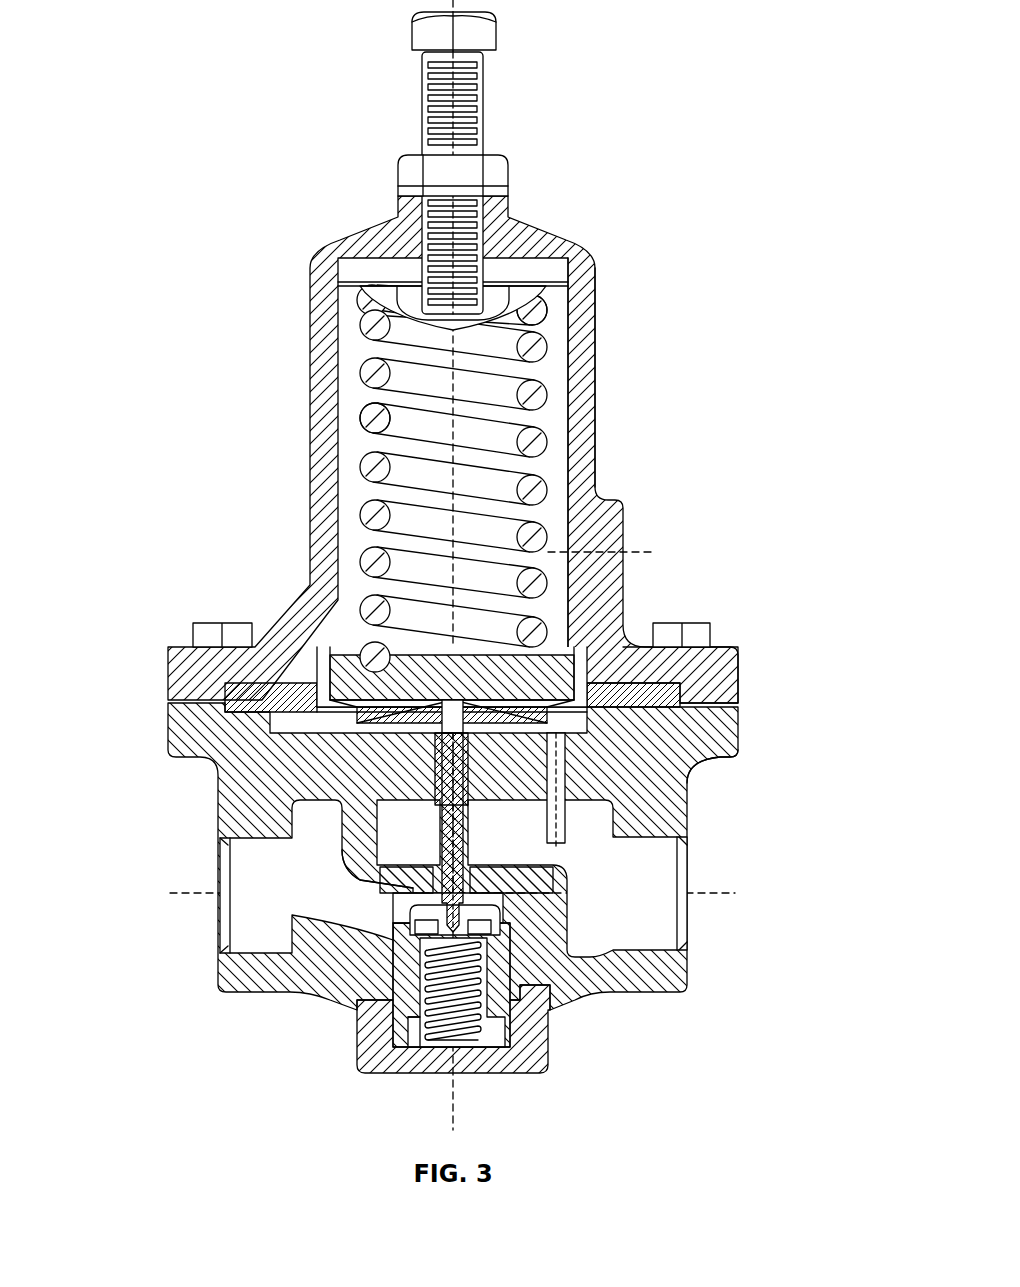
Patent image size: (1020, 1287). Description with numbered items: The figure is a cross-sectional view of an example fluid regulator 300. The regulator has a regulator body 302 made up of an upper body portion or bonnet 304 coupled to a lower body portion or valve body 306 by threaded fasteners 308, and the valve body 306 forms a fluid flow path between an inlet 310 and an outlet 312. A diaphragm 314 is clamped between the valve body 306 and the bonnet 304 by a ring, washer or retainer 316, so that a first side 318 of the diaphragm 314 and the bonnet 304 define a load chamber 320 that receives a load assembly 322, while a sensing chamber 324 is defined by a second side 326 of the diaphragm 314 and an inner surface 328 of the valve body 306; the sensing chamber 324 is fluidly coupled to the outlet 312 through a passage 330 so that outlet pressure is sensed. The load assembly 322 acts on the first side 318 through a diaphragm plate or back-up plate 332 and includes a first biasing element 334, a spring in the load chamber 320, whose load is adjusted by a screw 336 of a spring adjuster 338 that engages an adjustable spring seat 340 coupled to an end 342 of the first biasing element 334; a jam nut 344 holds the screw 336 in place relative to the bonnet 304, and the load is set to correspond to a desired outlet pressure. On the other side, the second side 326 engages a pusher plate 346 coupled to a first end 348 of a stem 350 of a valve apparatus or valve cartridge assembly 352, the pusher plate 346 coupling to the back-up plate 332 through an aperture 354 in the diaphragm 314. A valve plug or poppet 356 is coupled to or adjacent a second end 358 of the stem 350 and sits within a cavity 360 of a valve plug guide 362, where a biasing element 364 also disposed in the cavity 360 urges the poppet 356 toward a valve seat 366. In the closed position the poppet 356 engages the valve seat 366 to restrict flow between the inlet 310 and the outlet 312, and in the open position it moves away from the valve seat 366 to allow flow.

The fluid regulator 300 is at (618, 222).
The regulator body 302 is at (265, 253).
The bonnet 304 is at (742, 678).
The valve body 306 is at (742, 724).
The threaded fasteners 308 is at (218, 622).
The inlet 310 is at (216, 880).
The outlet 312 is at (690, 880).
The diaphragm 314 is at (330, 712).
The retainer 316 is at (238, 694).
The first side of the diaphragm 318 is at (617, 705).
The load chamber 320 is at (576, 418).
The load assembly 322 is at (357, 454).
The sensing chamber 324 is at (625, 722).
The second side of the diaphragm 326 is at (652, 758).
The inner surface of the valve body 328 is at (265, 720).
The passage 330 is at (560, 815).
The back-up plate 332 is at (330, 660).
The first biasing element 334 is at (372, 418).
The screw 336 is at (427, 81).
The spring adjuster 338 is at (493, 121).
The adjustable spring seat 340 is at (375, 282).
The end of the first biasing element 342 is at (542, 308).
The jam nut 344 is at (499, 178).
The pusher plate 346 is at (440, 722).
The first end of the stem 348 is at (452, 714).
The stem 350 is at (462, 820).
The valve cartridge assembly 352 is at (405, 988).
The aperture 354 is at (558, 757).
The poppet 356 is at (408, 928).
The second end of the stem 358 is at (490, 1002).
The cavity 360 is at (532, 1068).
The valve plug guide 362 is at (395, 1055).
The biasing element 364 is at (480, 1012).
The valve seat 366 is at (423, 882).